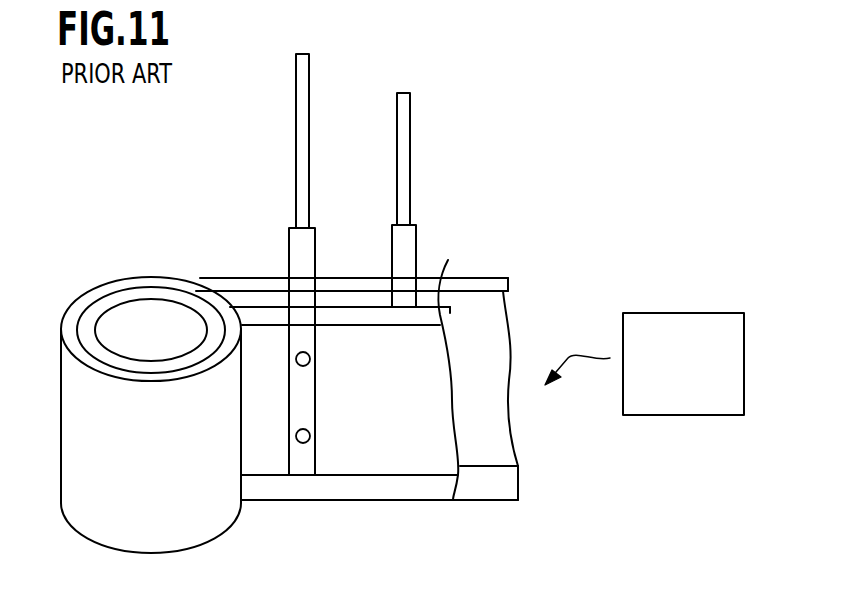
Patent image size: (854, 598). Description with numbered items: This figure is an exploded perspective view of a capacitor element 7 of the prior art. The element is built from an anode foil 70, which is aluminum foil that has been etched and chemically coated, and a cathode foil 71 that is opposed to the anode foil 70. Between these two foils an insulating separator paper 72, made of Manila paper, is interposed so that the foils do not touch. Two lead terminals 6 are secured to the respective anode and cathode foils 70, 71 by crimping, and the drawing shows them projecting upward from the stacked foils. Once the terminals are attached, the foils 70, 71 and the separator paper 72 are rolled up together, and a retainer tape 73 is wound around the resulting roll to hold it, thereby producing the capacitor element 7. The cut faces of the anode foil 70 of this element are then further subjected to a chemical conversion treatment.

The lead terminals 6 is at (309, 117).
The capacitor element 7 is at (250, 519).
The anode foil 70 is at (418, 450).
The cathode foil 71 is at (490, 445).
The insulating separator paper 72 is at (450, 260).
The retainer tape 73 is at (703, 328).